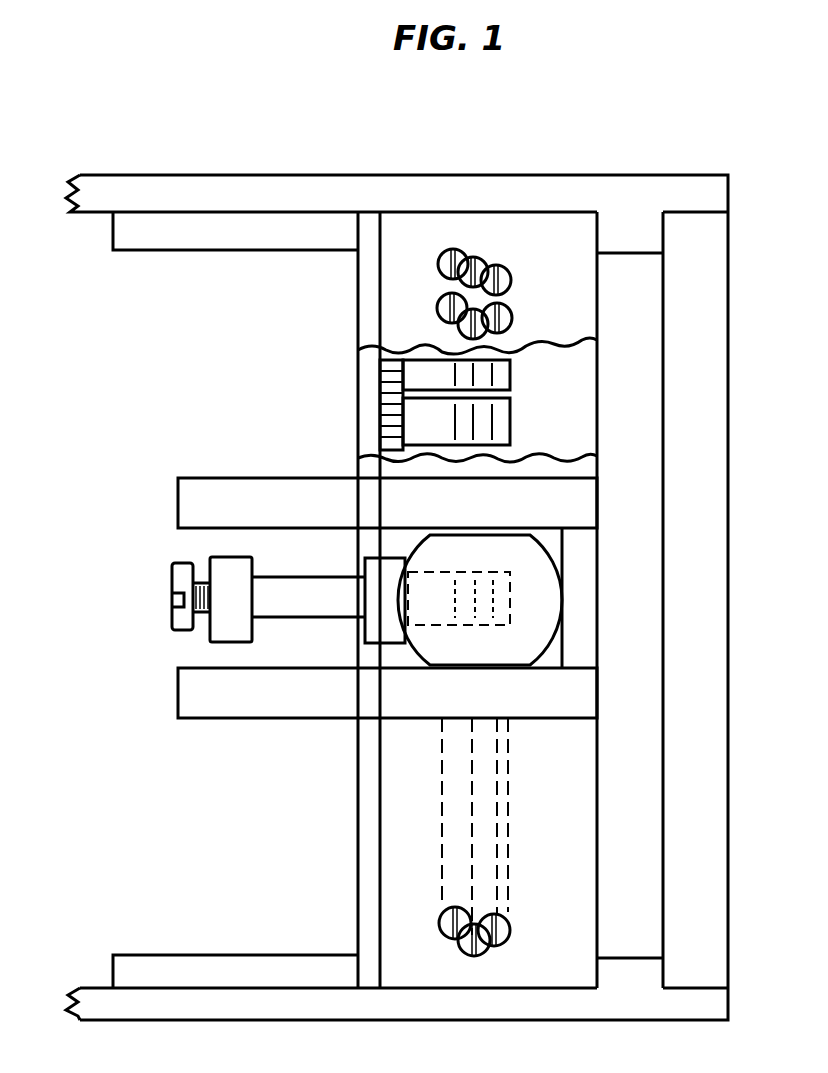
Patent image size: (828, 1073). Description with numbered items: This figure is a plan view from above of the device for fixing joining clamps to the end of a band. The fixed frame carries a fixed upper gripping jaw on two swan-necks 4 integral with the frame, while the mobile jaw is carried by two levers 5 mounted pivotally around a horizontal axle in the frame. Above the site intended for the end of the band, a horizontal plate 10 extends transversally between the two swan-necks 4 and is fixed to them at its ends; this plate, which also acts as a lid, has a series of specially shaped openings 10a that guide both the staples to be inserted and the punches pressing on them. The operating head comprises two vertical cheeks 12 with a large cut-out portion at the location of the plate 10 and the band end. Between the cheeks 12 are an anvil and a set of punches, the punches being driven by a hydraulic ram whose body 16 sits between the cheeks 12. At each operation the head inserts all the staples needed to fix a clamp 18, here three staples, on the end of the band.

The swan-neck 4 is at (232, 252).
The lever 5 is at (241, 186).
The horizontal plate 10 is at (398, 812).
The openings 10a is at (437, 308).
The vertical cheek 12 is at (291, 489).
The hydraulic ram body 16 is at (537, 607).
The clamp 18 is at (510, 368).